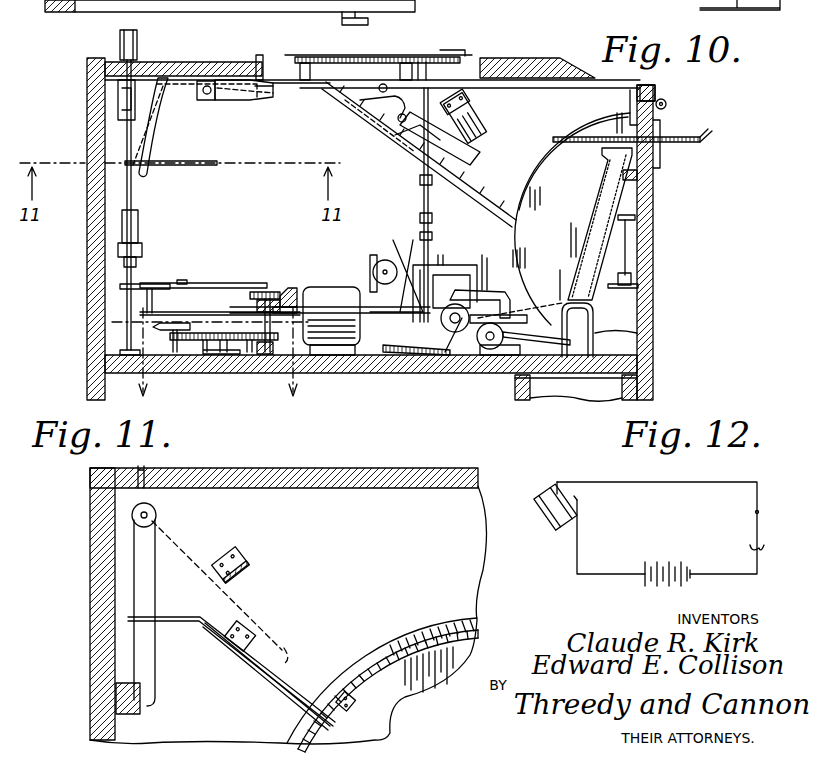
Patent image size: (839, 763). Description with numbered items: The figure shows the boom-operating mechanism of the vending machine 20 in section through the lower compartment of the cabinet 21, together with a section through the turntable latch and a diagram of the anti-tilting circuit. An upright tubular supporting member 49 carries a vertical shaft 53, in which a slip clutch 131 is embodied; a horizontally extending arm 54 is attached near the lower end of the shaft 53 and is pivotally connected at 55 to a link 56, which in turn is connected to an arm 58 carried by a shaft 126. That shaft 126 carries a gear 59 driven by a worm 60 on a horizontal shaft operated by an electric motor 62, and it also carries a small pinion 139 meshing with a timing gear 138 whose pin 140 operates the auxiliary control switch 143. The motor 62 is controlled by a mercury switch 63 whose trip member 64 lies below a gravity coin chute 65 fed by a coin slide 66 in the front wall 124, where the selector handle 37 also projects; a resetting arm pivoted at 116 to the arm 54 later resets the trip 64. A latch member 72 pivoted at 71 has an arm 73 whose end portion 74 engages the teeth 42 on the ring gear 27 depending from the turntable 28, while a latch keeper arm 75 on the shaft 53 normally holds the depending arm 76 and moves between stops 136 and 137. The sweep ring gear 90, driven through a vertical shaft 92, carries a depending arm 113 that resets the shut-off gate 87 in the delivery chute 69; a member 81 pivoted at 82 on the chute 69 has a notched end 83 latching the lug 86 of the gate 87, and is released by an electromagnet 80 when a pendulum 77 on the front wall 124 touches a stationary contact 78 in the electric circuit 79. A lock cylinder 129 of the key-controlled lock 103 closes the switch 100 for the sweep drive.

In FIG. 10, the vending machine 20 is at (235, 355).
In FIG. 10, the cabinet 21 is at (653, 232).
In FIG. 11, the cabinet 21 is at (404, 465).
In FIG. 10, the ring gear 27 is at (288, 57).
In FIG. 11, the ring gear 27 is at (376, 648).
In FIG. 10, the turntable 28 is at (441, 54).
In FIG. 11, the turntable 28 is at (430, 628).
In FIG. 10, the selector or handle 37 is at (368, 22).
In FIG. 11, the teeth 42 is at (333, 695).
In FIG. 10, the upright tubular supporting member 49 is at (137, 42).
In FIG. 10, the vertical shaft 53 is at (134, 190).
In FIG. 11, the vertical shaft 53 is at (157, 515).
In FIG. 10, the horizontally extending arm 54 is at (160, 285).
In FIG. 10, the pivotal connection 55 is at (184, 280).
In FIG. 10, the link 56 is at (240, 282).
In FIG. 10, the arm 58 is at (292, 290).
In FIG. 10, the gear 59 is at (248, 298).
In FIG. 10, the worm 60 is at (298, 296).
In FIG. 10, the electric motor 62 is at (327, 300).
In FIG. 10, the mercury switch 63 is at (465, 258).
In FIG. 10, the trip or circuit-closing member 64 is at (520, 336).
In FIG. 10, the gravity coin chute 65 is at (590, 290).
In FIG. 10, the coin slide 66 is at (695, 144).
In FIG. 10, the delivery chute 69 is at (466, 178).
In FIG. 10, the pivot 71 is at (208, 100).
In FIG. 11, the pivot 71 is at (233, 650).
In FIG. 10, the latch member 72 is at (240, 100).
In FIG. 11, the latch member 72 is at (258, 670).
In FIG. 10, the arm 73 is at (265, 97).
In FIG. 11, the arm 73 is at (285, 693).
In FIG. 10, the end portion 74 is at (260, 55).
In FIG. 10, the latch keeper arm 75 is at (210, 168).
In FIG. 11, the latch keeper arm 75 is at (152, 598).
In FIG. 10, the depending arm 76 is at (152, 138).
In FIG. 11, the depending arm 76 is at (183, 621).
In FIG. 10, the pendulum 77 is at (627, 258).
In FIG. 12, the pendulum 77 is at (754, 527).
In FIG. 10, the stationary contact 78 is at (640, 286).
In FIG. 12, the stationary contact 78 is at (762, 550).
In FIG. 12, the electric circuit 79 is at (697, 478).
In FIG. 10, the electromagnet 80 is at (475, 126).
In FIG. 12, the electromagnet 80 is at (558, 532).
In FIG. 10, the member 81 is at (450, 150).
In FIG. 10, the pivot 82 is at (400, 122).
In FIG. 10, the notched end portion 83 is at (381, 92).
In FIG. 10, the pin or lug 86 is at (372, 110).
In FIG. 10, the shut-off gate 87 is at (412, 145).
In FIG. 10, the ring gear 90 is at (340, 56).
In FIG. 10, the vertical shaft 92 is at (423, 200).
In FIG. 10, the switch 100 is at (620, 116).
In FIG. 10, the key-controlled lock 103 is at (655, 95).
In FIG. 10, the depending arm 113 is at (412, 58).
In FIG. 10, the pivotal connection 116 is at (150, 313).
In FIG. 10, the front wall 124 is at (653, 307).
In FIG. 10, the shaft 126 is at (245, 333).
In FIG. 10, the lock cylinder 129 is at (666, 106).
In FIG. 10, the slip clutch 131 is at (150, 232).
In FIG. 11, the stop 136 is at (250, 568).
In FIG. 11, the stop 137 is at (141, 714).
In FIG. 10, the timing gear 138 is at (249, 354).
In FIG. 10, the small gear or pinion 139 is at (268, 356).
In FIG. 10, the projection or pin 140 is at (206, 354).
In FIG. 10, the auxiliary control switch 143 is at (175, 322).